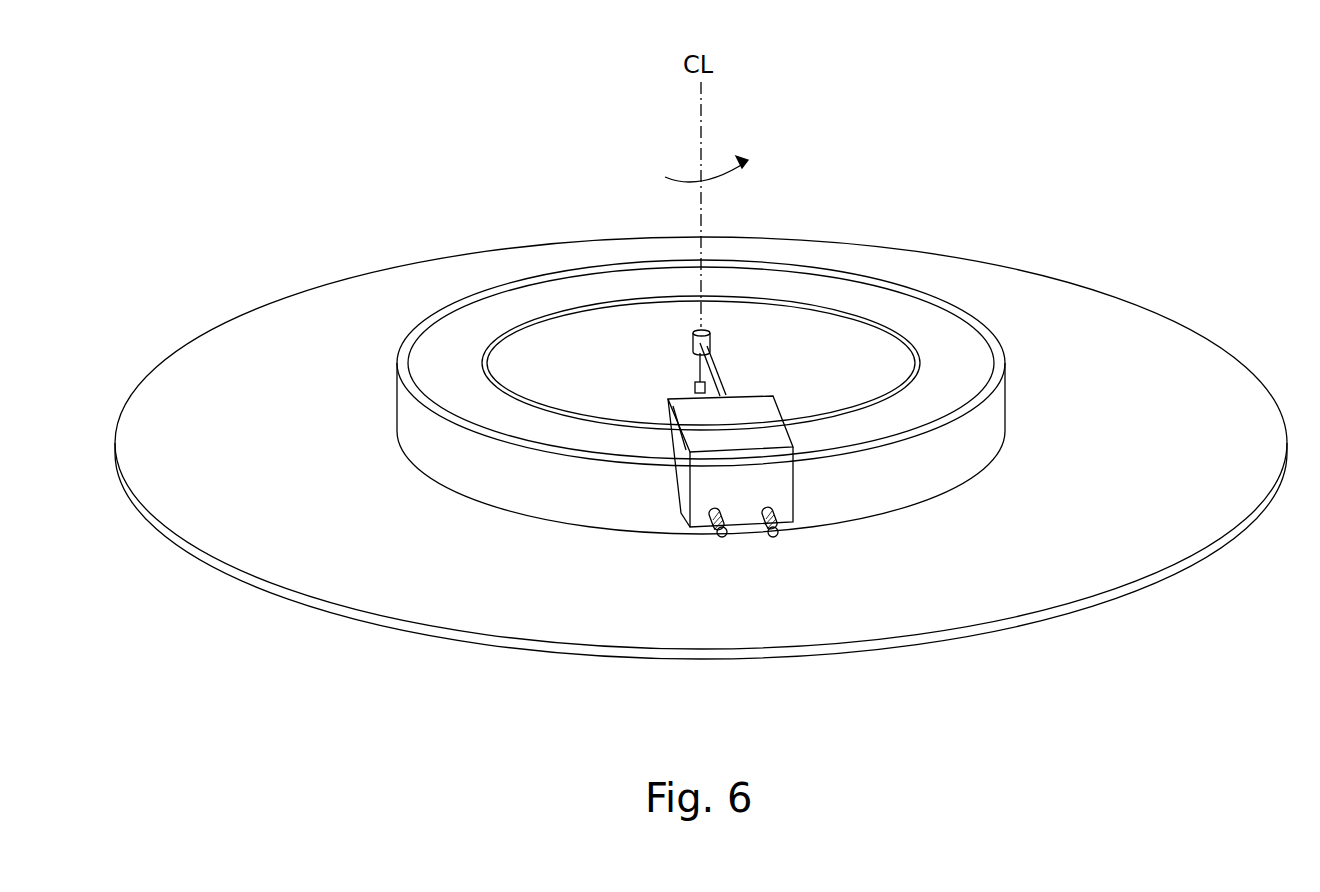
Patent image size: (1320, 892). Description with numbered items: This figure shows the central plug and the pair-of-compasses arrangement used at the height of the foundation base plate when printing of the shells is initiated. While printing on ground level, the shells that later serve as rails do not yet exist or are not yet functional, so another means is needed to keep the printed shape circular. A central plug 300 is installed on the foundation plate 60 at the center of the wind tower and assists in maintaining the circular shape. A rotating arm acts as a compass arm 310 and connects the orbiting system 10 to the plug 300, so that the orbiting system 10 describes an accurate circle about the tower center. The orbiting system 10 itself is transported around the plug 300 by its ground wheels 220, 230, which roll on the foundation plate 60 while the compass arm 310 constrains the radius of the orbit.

The foundation plate 60 is at (1175, 358).
The orbiting system 10 is at (783, 493).
The compass arm 310 is at (718, 380).
The central plug 300 is at (695, 388).
The ground wheels 220 is at (715, 537).
The second locating pin 230 is at (762, 538).